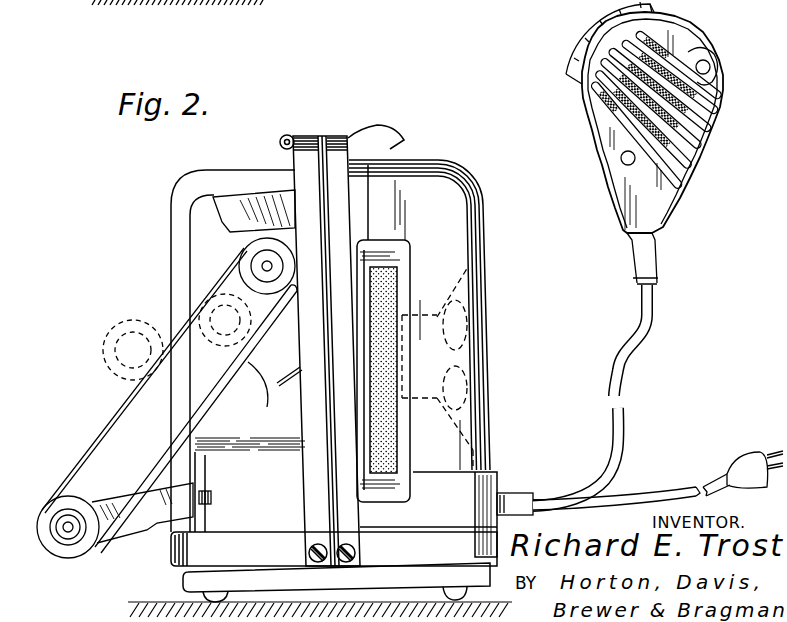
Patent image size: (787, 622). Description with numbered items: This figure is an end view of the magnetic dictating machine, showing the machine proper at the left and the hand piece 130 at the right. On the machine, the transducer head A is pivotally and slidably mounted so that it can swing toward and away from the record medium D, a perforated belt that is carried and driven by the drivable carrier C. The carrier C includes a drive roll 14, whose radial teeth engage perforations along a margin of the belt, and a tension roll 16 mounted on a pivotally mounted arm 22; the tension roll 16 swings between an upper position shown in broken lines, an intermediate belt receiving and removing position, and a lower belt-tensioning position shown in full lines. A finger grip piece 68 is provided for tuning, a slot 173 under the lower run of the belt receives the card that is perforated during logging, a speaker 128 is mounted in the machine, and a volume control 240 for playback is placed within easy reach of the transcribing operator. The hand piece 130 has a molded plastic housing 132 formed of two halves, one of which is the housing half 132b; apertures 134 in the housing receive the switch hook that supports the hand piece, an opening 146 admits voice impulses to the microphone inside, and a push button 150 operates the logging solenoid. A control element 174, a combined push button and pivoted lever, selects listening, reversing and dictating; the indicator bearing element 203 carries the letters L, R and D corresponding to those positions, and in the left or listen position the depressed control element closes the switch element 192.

The transducer head A is at (253, 189).
The drivable carrier C is at (238, 283).
The record medium D is at (105, 432).
The drive roll 14 is at (256, 262).
The tension roll 16 is at (128, 318).
The pivotally mounted arm 22 is at (163, 425).
The finger grip piece 68 is at (287, 378).
The slot 173 is at (196, 419).
The volume control 240 is at (212, 498).
The speaker 128 is at (467, 353).
The switch element 192 is at (513, 493).
The hand piece 130 is at (591, 131).
The outer casing or housing 132 is at (606, 164).
The housing half 132b is at (613, 194).
The apertures 134 is at (709, 64).
The opening 146 is at (690, 125).
The push button 150 is at (631, 165).
The control element 174 is at (569, 46).
The indicator bearing element 203 is at (652, 13).